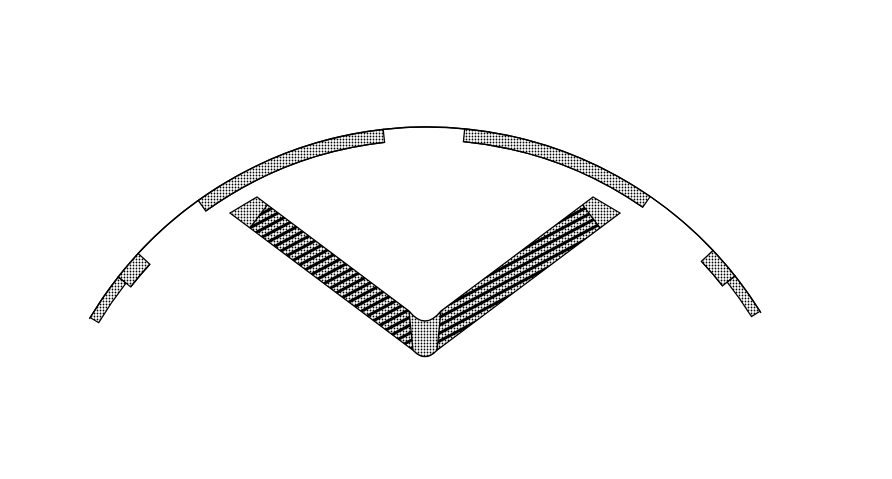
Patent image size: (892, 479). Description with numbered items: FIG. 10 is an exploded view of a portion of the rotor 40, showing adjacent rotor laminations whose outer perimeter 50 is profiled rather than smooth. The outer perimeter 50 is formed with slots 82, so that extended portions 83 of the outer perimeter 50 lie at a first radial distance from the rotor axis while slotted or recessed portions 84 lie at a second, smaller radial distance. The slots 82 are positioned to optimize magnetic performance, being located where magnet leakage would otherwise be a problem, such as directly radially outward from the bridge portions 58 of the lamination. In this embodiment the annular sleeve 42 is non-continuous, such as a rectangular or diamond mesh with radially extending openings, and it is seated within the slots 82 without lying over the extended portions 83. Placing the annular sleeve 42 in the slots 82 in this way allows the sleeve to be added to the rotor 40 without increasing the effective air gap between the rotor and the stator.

The rotor 40 is at (764, 133).
The annular sleeve 42 is at (120, 263).
The outer perimeter 50 is at (150, 232).
The bridge portions 58 is at (238, 200).
The slots 82 is at (93, 295).
The extended portions 83 is at (173, 220).
The recessed portions 84 is at (123, 281).